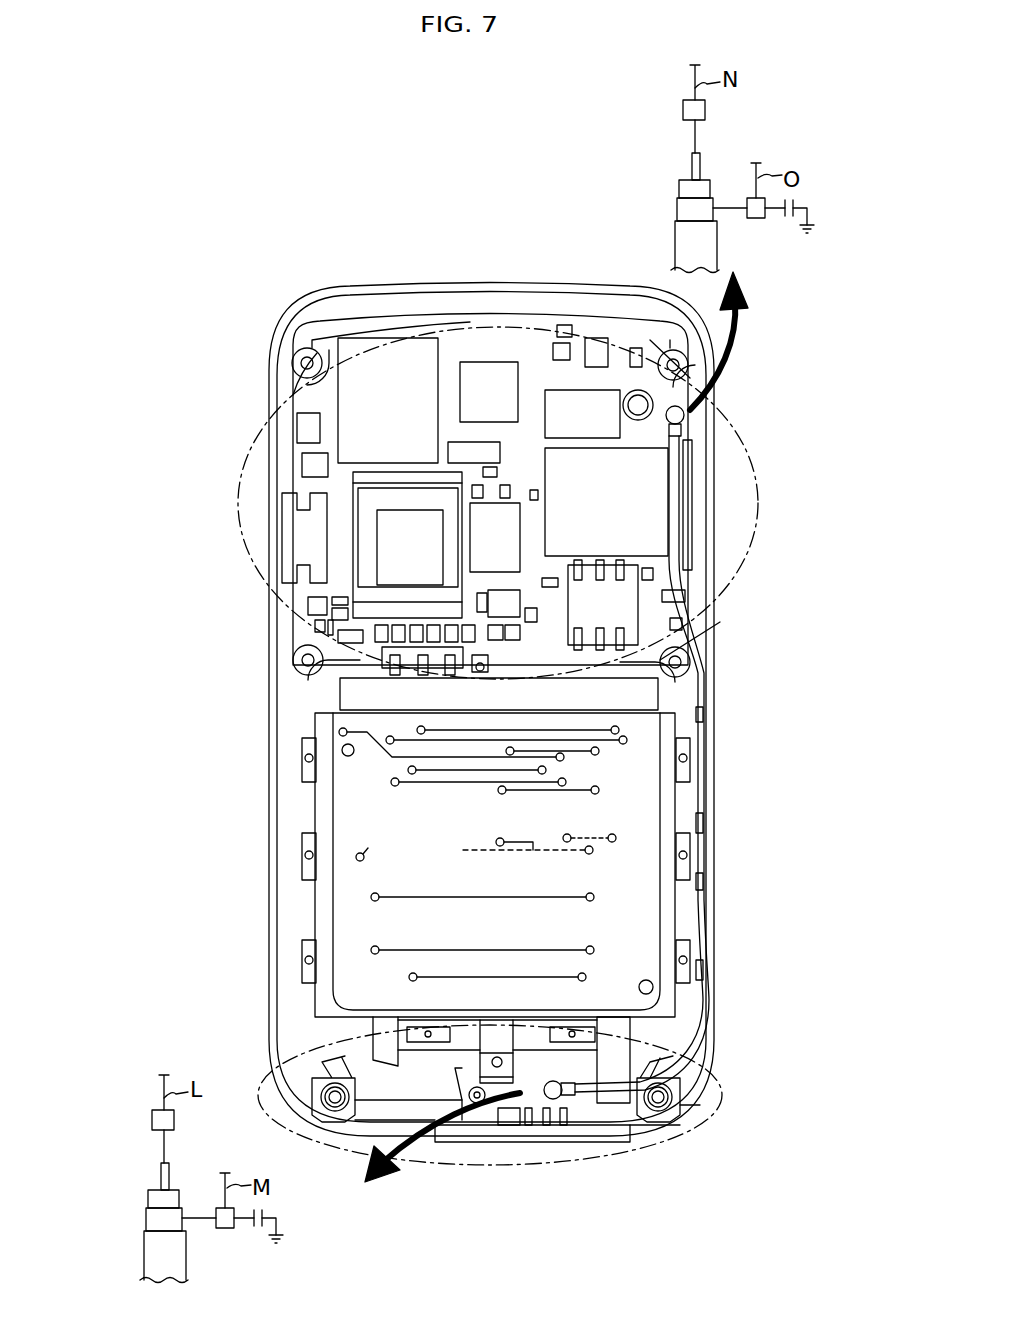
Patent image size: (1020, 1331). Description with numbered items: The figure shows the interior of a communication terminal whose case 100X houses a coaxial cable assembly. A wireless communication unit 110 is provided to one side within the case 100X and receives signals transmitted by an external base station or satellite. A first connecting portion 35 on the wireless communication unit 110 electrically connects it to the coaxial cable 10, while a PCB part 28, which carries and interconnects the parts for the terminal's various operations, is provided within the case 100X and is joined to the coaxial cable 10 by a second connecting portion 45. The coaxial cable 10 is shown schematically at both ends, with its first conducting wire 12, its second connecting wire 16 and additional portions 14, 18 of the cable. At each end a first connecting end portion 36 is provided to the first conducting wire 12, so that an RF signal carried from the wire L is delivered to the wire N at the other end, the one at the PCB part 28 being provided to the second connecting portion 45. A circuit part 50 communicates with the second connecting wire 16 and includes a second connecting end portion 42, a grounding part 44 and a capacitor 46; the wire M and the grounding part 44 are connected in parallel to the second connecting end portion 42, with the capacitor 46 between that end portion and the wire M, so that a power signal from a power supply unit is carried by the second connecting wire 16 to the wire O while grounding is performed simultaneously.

The case 100X is at (270, 740).
The coaxial cable 10 is at (703, 755).
The first conducting wire 12 is at (690, 163).
The insulator 14 is at (679, 192).
The second connecting wire 16 is at (677, 213).
The jacket 18 is at (675, 257).
The PCB part 28 is at (758, 505).
The first connecting portion 35 is at (560, 1098).
The first connecting end portion 36 is at (683, 108).
The second connecting end portion 42 is at (758, 218).
The grounding part 44 is at (812, 228).
The second connecting portion 45 is at (684, 415).
The capacitor 46 is at (793, 200).
The circuit part 50 is at (539, 719).
The wireless communication unit 110 is at (730, 1083).